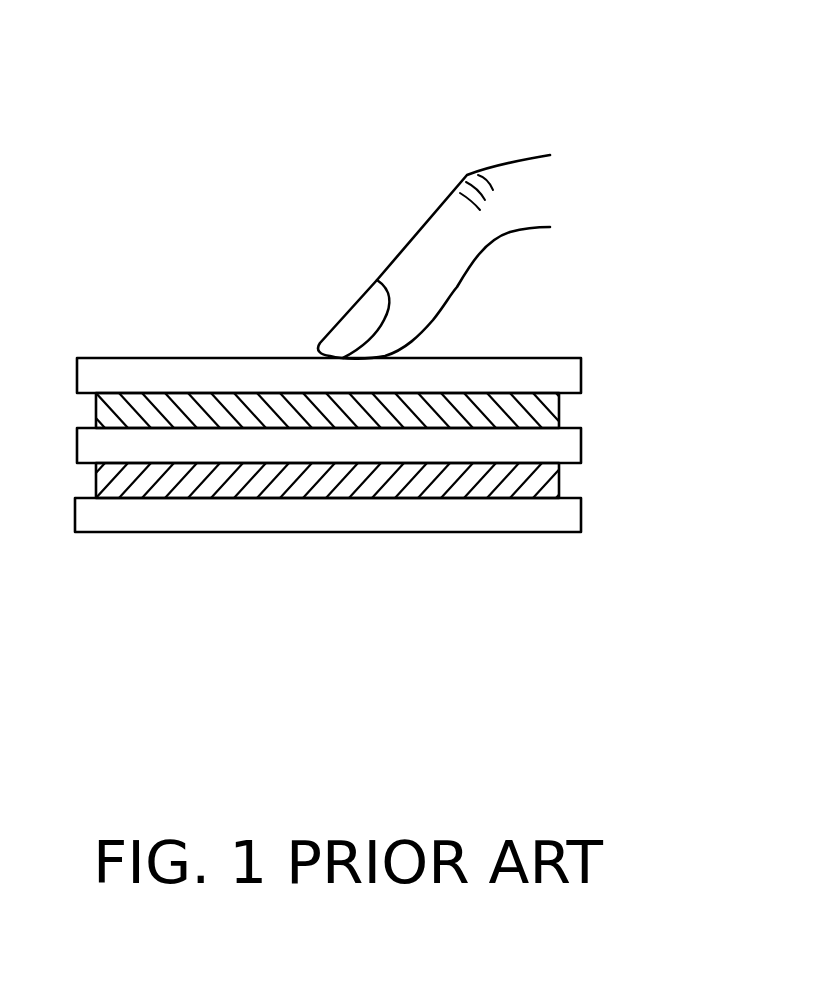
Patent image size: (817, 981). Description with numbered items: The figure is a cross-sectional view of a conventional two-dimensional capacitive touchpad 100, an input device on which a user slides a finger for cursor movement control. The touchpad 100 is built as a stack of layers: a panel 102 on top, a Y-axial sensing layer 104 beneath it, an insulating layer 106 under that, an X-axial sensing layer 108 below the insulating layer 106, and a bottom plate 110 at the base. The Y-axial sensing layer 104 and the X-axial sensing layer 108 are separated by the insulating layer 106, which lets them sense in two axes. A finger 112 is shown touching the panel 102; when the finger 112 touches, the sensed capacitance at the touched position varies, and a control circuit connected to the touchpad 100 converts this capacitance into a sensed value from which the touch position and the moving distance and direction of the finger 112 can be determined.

The two-dimensional capacitive touchpad 100 is at (601, 320).
The panel 102 is at (570, 373).
The Y-axial sensing layer 104 is at (553, 412).
The insulating layer 106 is at (570, 443).
The X-axial sensing layer 108 is at (553, 482).
The bottom plate 110 is at (570, 517).
The finger 112 is at (517, 162).